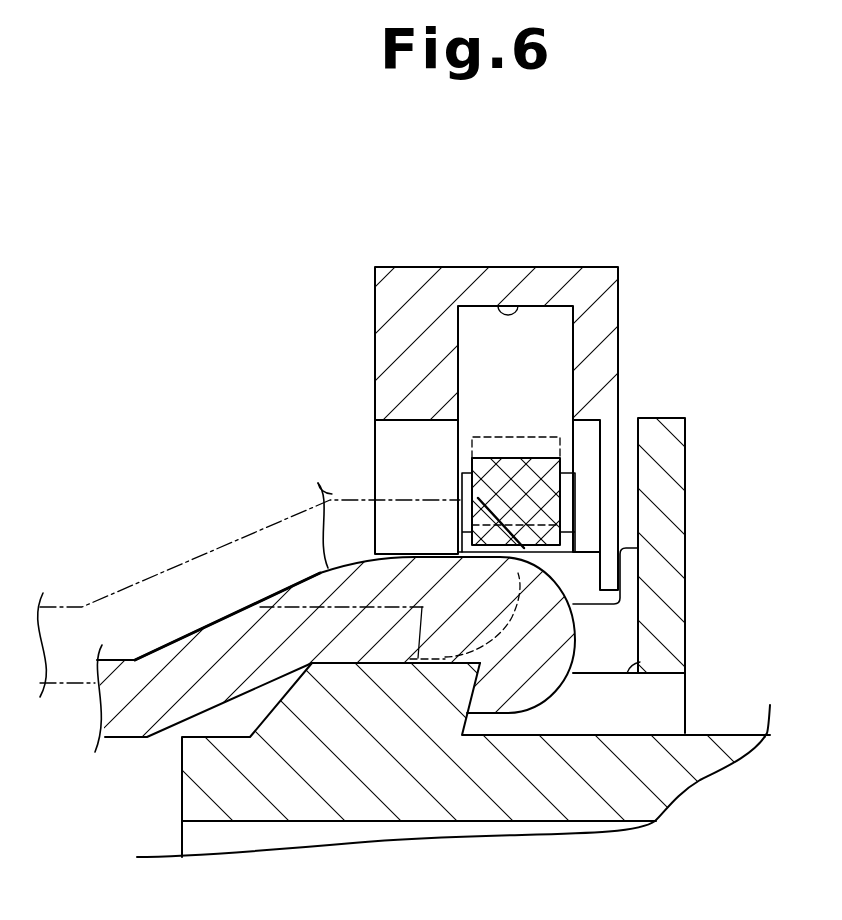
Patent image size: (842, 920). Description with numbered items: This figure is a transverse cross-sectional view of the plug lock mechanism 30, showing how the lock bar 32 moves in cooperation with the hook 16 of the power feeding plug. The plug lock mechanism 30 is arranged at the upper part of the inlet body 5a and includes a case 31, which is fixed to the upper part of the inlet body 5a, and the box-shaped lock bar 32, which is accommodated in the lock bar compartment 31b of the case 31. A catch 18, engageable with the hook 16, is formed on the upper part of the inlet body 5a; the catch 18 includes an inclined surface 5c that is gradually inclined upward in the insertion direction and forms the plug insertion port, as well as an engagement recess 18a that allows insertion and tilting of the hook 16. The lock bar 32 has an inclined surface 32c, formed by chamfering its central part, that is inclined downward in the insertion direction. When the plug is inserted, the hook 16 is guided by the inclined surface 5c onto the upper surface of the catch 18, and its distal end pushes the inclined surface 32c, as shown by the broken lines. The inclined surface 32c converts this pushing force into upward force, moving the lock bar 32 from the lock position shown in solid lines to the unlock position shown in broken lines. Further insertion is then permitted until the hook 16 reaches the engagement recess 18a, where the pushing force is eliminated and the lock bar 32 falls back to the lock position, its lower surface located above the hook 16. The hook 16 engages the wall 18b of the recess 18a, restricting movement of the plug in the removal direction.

The inlet body 5a is at (177, 532).
The inclined surface 5c is at (292, 697).
The hook 16 is at (316, 508).
The catch 18 is at (380, 660).
The engagement recess 18a is at (640, 662).
The wall 18b is at (478, 693).
The plug lock mechanism 30 is at (674, 238).
The case 31 is at (600, 238).
The lock bar compartment 31b is at (498, 306).
The lock bar 32 is at (548, 498).
The inclined surface 32c is at (470, 507).